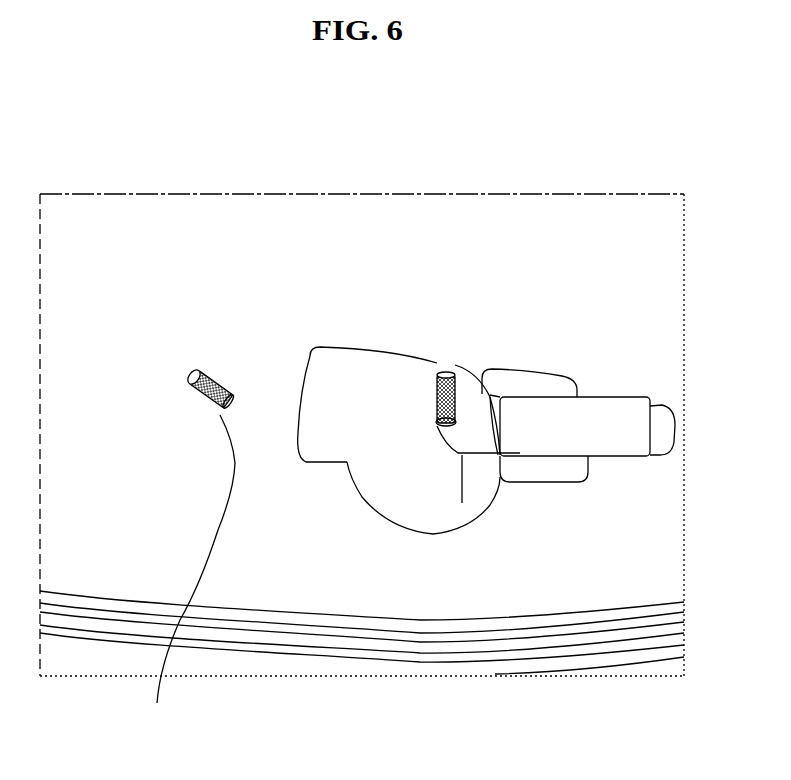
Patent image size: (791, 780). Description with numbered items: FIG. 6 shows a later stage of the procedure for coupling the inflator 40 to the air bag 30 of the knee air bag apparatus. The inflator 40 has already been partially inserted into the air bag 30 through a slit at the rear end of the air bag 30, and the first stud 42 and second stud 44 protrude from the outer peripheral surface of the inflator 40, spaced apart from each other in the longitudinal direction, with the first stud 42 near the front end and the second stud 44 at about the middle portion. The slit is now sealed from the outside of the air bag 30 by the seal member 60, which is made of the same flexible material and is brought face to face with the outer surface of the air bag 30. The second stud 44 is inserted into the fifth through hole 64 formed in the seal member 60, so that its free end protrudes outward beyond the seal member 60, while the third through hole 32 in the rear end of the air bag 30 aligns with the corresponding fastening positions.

The air bag 30 is at (363, 235).
The third through hole 32 is at (157, 703).
The inflator 40 is at (572, 430).
The first stud 42 is at (190, 370).
The second stud 44 is at (440, 370).
The seal member 60 is at (397, 437).
The fifth through hole 64 is at (462, 503).